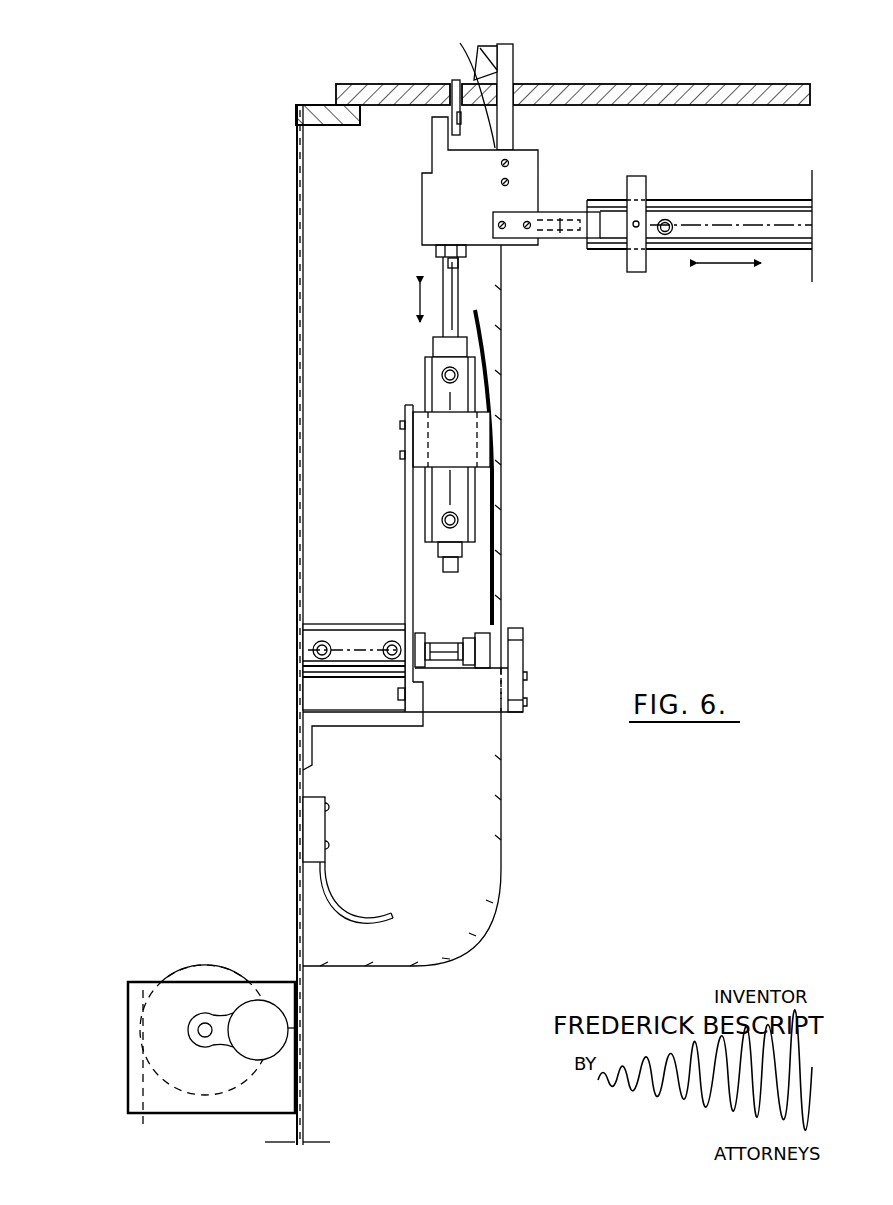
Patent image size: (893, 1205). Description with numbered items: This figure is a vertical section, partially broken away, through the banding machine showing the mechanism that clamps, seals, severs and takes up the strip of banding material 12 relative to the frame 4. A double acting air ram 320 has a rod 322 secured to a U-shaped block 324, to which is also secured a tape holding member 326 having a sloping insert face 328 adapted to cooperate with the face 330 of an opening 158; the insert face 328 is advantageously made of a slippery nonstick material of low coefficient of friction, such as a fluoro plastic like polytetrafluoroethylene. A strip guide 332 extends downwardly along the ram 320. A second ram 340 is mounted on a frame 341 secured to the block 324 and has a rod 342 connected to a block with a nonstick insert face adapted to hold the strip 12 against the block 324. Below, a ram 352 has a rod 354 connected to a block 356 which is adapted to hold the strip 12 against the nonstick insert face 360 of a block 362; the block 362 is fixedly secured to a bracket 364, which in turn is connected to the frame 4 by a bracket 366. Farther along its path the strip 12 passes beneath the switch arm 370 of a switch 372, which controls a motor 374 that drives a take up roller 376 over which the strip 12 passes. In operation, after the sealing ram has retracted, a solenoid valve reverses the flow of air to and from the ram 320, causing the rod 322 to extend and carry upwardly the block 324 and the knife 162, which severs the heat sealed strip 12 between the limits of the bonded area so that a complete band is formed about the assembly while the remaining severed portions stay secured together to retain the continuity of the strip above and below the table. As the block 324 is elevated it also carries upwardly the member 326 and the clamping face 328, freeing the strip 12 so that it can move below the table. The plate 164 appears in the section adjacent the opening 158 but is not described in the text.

The frame 4 is at (297, 743).
The strip of banding material 12 is at (483, 92).
The opening 158 is at (517, 97).
The knife 162 is at (452, 108).
The plate 164 is at (447, 95).
The double acting air ram 320 is at (463, 392).
The rod 322 is at (443, 276).
The U-shaped block 324 is at (477, 221).
The tape holding member 326 is at (507, 125).
The sloping insert face 328 is at (487, 52).
The face of opening 330 is at (460, 86).
The strip guide 332 is at (493, 473).
The ram 340 is at (731, 188).
The frame 341 is at (563, 243).
The rod 342 is at (560, 217).
The ram 352 is at (378, 608).
The rod 354 is at (442, 645).
The block 356 is at (478, 668).
The nonstick insert face 360 is at (509, 628).
The block 362 is at (517, 644).
The bracket 364 is at (470, 712).
The bracket 366 is at (372, 722).
The switch arm 370 is at (345, 913).
The switch 372 is at (323, 820).
The motor 374 is at (300, 1021).
The take up roller 376 is at (128, 1022).